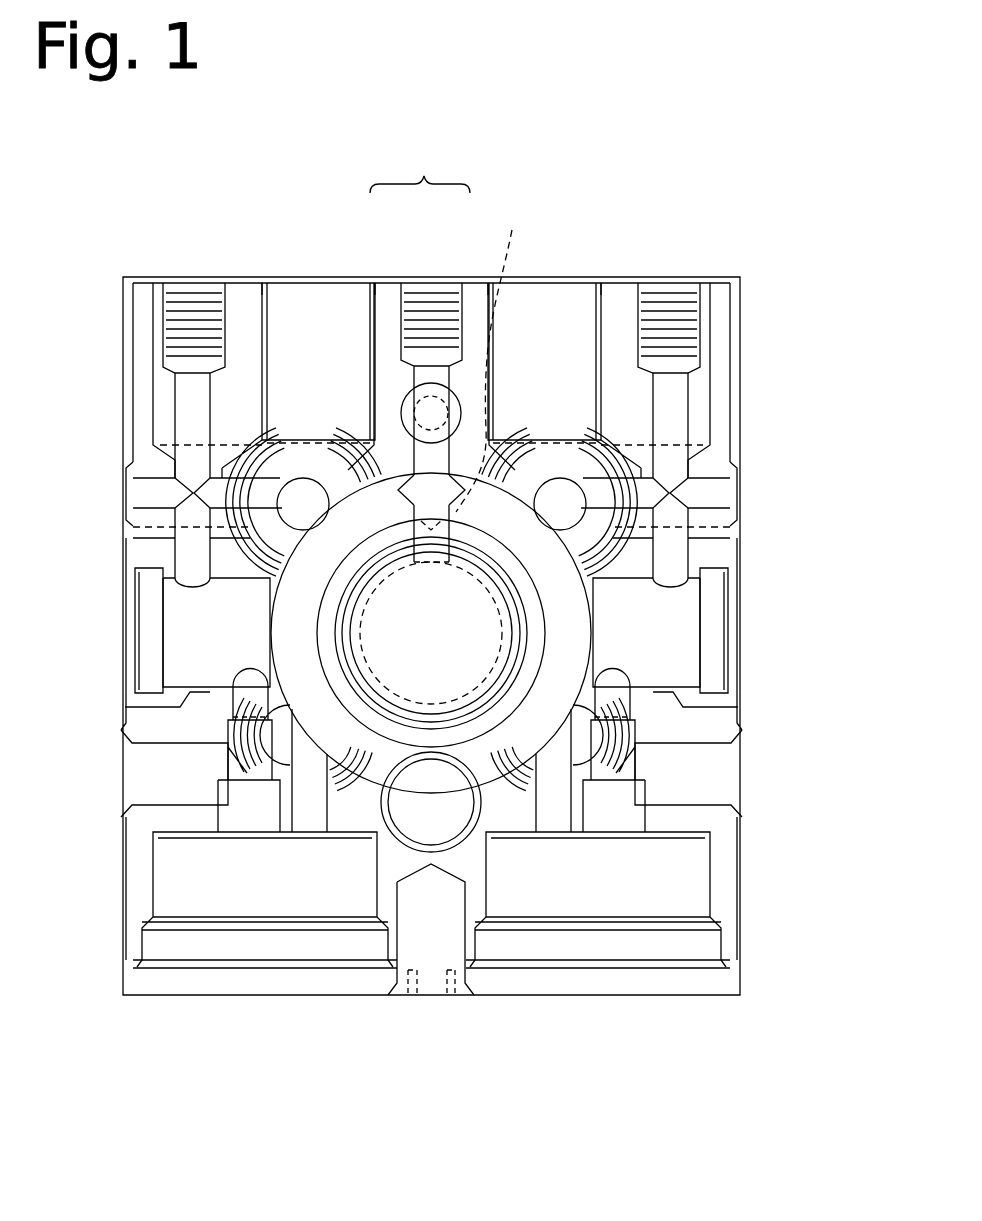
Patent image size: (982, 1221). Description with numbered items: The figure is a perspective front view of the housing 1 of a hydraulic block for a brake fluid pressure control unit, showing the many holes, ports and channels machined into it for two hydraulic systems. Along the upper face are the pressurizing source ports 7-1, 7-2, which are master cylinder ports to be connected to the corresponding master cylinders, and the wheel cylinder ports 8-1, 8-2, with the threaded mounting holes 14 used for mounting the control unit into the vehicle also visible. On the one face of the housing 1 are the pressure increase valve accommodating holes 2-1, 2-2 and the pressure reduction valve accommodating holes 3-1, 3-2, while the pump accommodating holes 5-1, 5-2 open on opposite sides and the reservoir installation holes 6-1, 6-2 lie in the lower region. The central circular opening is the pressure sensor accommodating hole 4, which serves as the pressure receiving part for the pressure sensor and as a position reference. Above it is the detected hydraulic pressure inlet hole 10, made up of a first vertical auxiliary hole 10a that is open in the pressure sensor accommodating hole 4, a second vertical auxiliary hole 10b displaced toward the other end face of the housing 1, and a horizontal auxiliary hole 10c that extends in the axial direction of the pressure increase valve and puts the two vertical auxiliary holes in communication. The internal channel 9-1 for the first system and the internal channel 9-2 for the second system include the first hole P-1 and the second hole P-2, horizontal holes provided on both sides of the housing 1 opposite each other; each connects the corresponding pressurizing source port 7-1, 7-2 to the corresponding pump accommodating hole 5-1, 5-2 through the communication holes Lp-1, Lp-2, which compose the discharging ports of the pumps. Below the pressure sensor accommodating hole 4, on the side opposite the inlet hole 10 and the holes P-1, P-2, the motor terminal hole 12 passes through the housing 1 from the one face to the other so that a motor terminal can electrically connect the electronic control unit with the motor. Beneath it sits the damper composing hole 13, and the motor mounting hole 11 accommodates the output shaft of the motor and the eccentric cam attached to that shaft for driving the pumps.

The housing 1 is at (733, 335).
The pressure increase valve accommodating hole 2-1 is at (612, 563).
The pressure increase valve accommodating hole 2-2 is at (215, 565).
The pressure reduction valve accommodating hole 3-1 is at (598, 727).
The pressure reduction valve accommodating hole 3-2 is at (262, 775).
The pressure sensor accommodating hole 4 is at (480, 627).
The pump accommodating hole 5-1 is at (712, 667).
The pump accommodating hole 5-2 is at (150, 666).
The reservoir installation hole 6-1 is at (642, 990).
The reservoir installation hole 6-2 is at (250, 990).
The pressurizing source port 7-1 is at (546, 300).
The pressurizing source port 7-2 is at (320, 298).
The wheel cylinder port 8-1 is at (620, 300).
The wheel cylinder port 8-2 is at (246, 298).
The internal channel for first system 9-1 is at (622, 494).
The internal channel for second system 9-2 is at (238, 495).
The detected hydraulic pressure inlet hole 10 is at (420, 169).
The first vertical auxiliary hole 10a is at (500, 356).
The second vertical auxiliary hole 10b is at (433, 370).
The horizontal auxiliary hole 10c is at (398, 385).
The motor mounting hole 11 is at (370, 752).
The motor terminal hole 12 is at (462, 805).
The damper composing hole 13 is at (432, 975).
The control unit mounting hole 14 is at (128, 773).
The communication hole Lp-1 is at (678, 403).
The communication hole Lp-2 is at (186, 397).
The first hole P-1 is at (668, 492).
The second hole P-2 is at (200, 492).